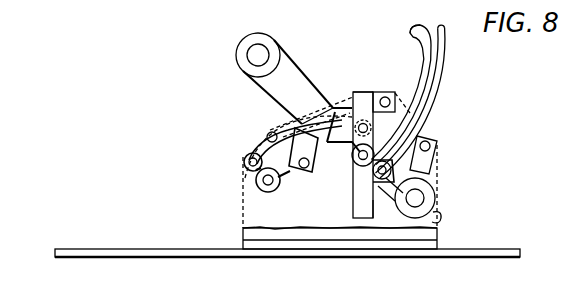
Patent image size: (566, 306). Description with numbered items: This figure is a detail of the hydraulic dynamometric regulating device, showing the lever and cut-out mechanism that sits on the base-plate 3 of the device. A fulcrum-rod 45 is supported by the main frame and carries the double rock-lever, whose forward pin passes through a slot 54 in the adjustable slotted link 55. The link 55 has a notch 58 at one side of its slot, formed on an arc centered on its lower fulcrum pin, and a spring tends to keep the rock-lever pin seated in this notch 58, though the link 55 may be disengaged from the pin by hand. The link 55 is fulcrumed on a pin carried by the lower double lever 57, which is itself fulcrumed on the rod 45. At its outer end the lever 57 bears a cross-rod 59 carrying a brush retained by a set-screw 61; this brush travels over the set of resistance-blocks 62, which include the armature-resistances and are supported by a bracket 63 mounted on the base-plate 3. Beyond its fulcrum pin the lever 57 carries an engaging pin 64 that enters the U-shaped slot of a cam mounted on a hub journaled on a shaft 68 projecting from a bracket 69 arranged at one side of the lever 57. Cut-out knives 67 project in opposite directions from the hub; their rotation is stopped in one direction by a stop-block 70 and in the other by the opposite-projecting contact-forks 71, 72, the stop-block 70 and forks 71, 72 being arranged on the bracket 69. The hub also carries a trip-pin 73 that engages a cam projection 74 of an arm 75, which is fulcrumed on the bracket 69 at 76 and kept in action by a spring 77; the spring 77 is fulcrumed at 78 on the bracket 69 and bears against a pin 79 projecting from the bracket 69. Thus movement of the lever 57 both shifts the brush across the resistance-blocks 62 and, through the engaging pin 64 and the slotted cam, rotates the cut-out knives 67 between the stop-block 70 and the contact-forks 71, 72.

The base-plate 3 is at (92, 251).
The fulcrum-rod 45 is at (252, 58).
The slot 54 is at (430, 58).
The adjustable slotted link 55 is at (447, 71).
The double lever 57 is at (302, 84).
The notch 58 is at (416, 28).
The cross-rod 59 is at (418, 197).
The set-screw 61 is at (441, 215).
The resistance-blocks 62 is at (361, 91).
The bracket 63 is at (373, 172).
The engaging pin 64 is at (358, 164).
The cut-out knives 67 is at (362, 218).
The shaft 68 is at (386, 216).
The bracket 69 is at (243, 212).
The stop-block 70 is at (377, 93).
The contact-fork 71 is at (434, 162).
The contact-fork 72 is at (290, 150).
The trip-pin 73 is at (421, 120).
The cam projection 74 is at (298, 172).
The arm 75 is at (278, 119).
The fulcrum 76 is at (265, 192).
The spring 77 is at (332, 107).
The fulcrum 78 is at (244, 164).
The pin 79 is at (298, 147).